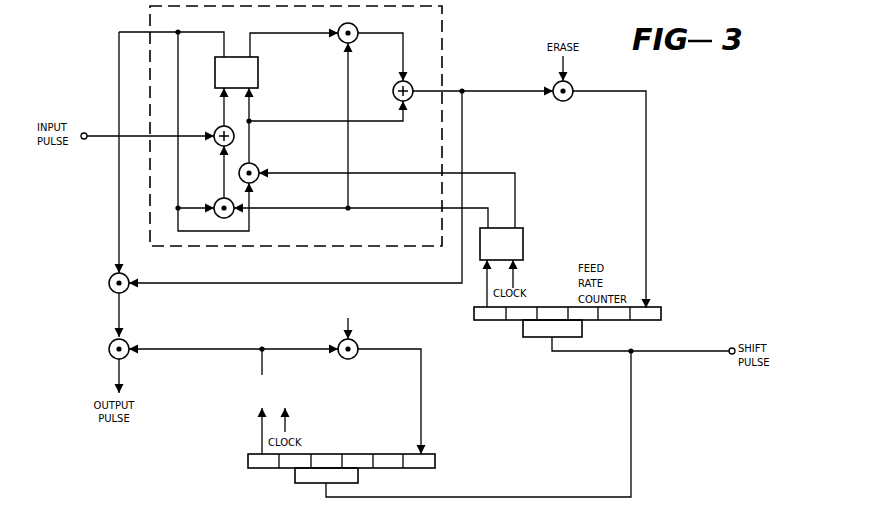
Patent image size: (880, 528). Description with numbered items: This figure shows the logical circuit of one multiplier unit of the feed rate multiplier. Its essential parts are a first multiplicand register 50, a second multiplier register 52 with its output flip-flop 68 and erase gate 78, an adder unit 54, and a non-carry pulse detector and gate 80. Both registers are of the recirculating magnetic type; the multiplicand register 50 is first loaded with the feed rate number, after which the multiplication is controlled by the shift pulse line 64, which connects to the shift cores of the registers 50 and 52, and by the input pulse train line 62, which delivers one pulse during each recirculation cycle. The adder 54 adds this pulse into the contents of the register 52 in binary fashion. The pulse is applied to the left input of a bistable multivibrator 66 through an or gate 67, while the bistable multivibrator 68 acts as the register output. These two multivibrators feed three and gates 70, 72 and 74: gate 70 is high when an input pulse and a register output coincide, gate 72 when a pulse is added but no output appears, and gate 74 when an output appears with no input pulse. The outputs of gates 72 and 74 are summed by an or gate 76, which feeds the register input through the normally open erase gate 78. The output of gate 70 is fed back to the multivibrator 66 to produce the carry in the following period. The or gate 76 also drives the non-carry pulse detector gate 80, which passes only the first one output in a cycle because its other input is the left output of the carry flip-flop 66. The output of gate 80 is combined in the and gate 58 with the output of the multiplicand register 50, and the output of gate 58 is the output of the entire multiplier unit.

The multiplicand register 50 is at (248, 460).
The multiplier register 52 is at (474, 311).
The adder unit 54 is at (278, 247).
The and gate 58 is at (109, 346).
The input pulse train line 62 is at (87, 140).
The shift pulse line 64 is at (693, 351).
The bistable multivibrator 66 is at (258, 66).
The or gate 67 is at (217, 128).
The bistable multivibrator 68 is at (523, 235).
The and gate 70 is at (217, 201).
The and gate 72 is at (256, 166).
The and gate 74 is at (356, 28).
The or gate 76 is at (410, 84).
The erase gate 78 is at (570, 85).
The non-carry pulse detector and gate 80 is at (109, 282).